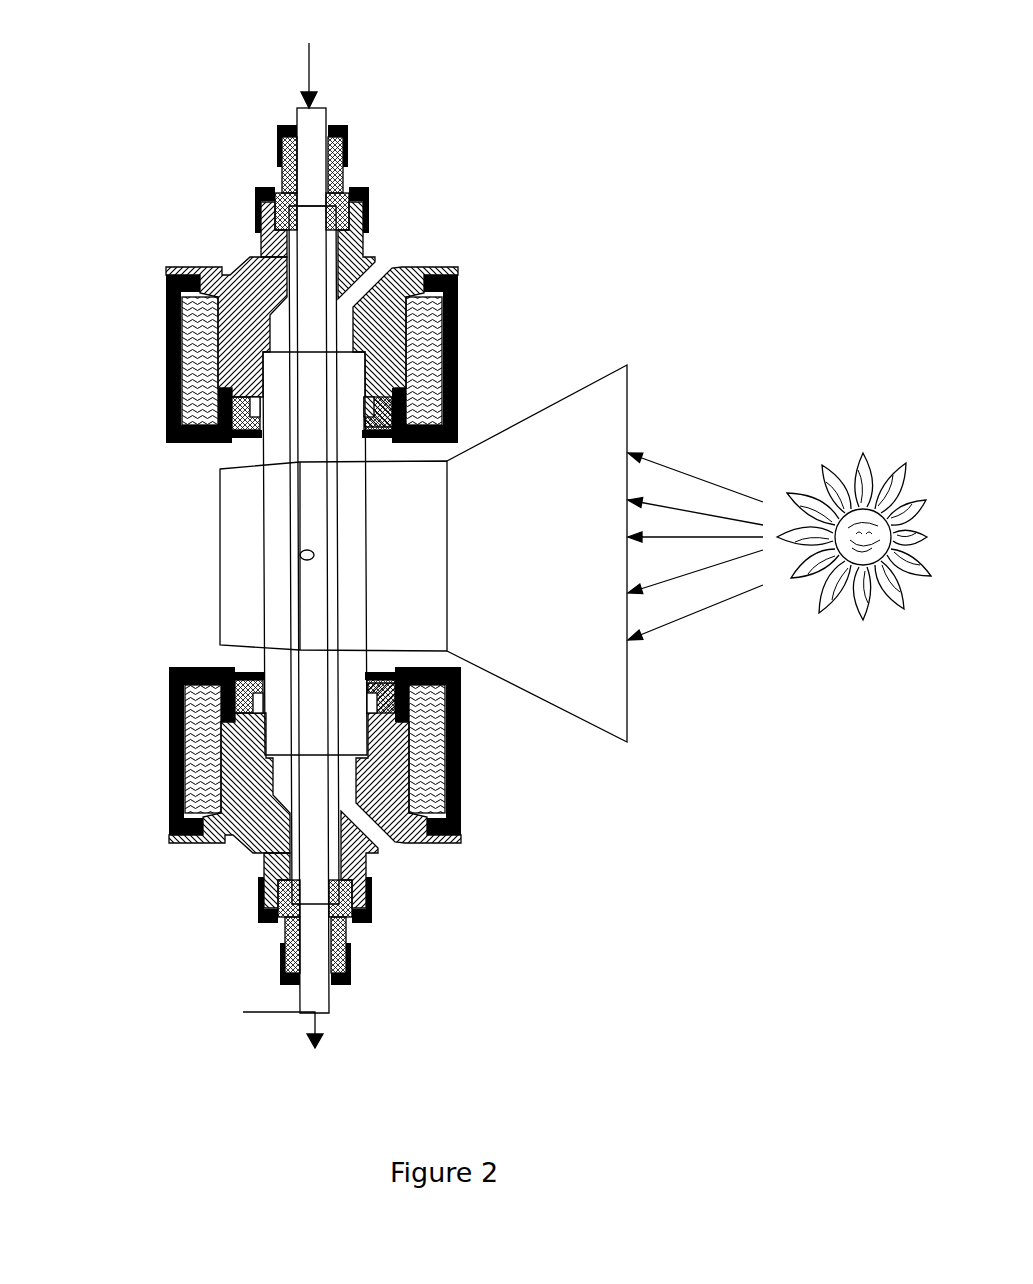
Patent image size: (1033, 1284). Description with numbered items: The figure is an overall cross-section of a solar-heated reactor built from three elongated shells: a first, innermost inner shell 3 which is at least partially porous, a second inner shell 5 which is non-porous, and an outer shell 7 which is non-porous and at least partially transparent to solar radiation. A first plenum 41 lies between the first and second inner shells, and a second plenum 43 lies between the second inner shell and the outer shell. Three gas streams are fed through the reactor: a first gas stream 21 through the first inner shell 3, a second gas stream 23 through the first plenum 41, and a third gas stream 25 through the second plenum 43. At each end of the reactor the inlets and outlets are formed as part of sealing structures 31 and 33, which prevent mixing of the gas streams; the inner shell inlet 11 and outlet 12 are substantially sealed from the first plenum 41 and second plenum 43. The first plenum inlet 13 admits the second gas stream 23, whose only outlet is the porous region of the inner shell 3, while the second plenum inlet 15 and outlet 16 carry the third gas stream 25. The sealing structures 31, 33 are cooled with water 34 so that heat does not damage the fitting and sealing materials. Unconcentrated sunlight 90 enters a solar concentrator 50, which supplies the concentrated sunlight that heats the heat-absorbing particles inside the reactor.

The first inner shell 3 is at (298, 123).
The second inner shell 5 is at (262, 250).
The outer shell 7 is at (263, 445).
The inner shell inlet 11 is at (325, 108).
The inner shell outlet 12 is at (262, 1027).
The first plenum inlet 13 is at (352, 927).
The second plenum inlet 15 is at (387, 840).
The second plenum outlet 16 is at (348, 333).
The first gas stream 21 is at (318, 62).
The second gas stream 23 is at (365, 942).
The third gas stream 25 is at (395, 257).
The sealing structure 31 is at (143, 128).
The sealing structure 33 is at (143, 665).
The water 34 is at (460, 372).
The first plenum 41 is at (333, 192).
The second plenum 43 is at (403, 267).
The solar concentrator 50 is at (568, 423).
The unconcentrated sunlight 90 is at (779, 563).